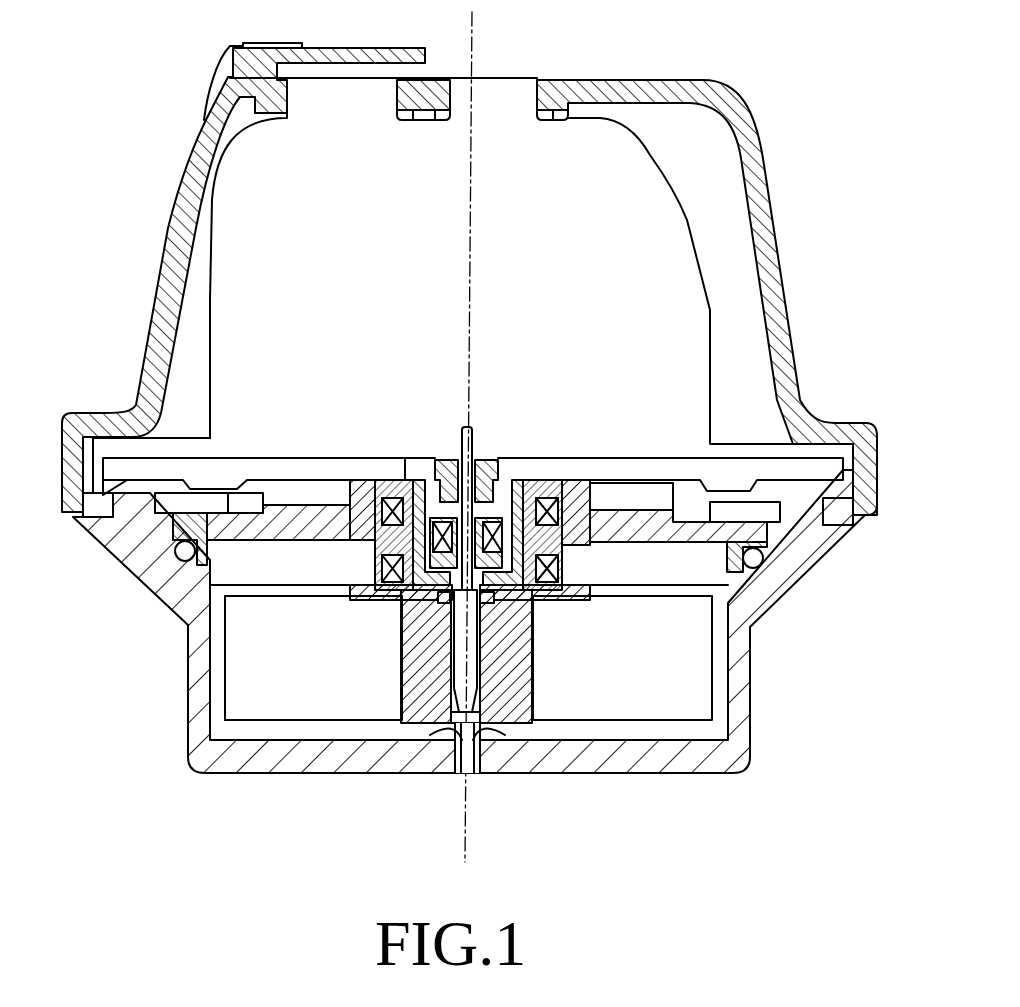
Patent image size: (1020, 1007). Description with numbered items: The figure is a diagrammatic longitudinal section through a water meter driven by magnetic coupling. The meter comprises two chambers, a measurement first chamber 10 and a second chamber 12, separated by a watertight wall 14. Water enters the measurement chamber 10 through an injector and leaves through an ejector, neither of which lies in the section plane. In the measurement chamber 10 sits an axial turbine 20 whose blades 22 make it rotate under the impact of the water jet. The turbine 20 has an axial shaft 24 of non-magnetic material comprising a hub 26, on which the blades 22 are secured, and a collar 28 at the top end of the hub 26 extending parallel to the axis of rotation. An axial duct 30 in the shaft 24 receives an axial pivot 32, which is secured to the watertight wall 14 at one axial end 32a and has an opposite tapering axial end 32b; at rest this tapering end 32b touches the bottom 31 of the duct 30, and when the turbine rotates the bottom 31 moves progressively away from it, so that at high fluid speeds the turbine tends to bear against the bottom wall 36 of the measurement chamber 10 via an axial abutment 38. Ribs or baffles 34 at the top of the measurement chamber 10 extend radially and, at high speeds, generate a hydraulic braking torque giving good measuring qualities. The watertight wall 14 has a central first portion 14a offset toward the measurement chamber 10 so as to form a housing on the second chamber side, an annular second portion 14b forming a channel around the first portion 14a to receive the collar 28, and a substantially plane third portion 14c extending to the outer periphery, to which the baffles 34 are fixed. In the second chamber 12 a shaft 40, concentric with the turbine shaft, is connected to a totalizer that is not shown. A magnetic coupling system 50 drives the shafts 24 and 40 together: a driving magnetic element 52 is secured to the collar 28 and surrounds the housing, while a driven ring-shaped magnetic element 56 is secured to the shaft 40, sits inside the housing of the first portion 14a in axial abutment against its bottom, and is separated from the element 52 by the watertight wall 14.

The measurement first chamber 10 is at (165, 606).
The second chamber 12 is at (683, 297).
The watertight wall 14 is at (148, 410).
The central portion of the watertight wall 14a is at (498, 505).
The annular second portion of the watertight wall 14b is at (573, 475).
The plane third portion of the watertight wall 14c is at (803, 410).
The axial turbine 20 is at (385, 730).
The blades 22 is at (690, 695).
The axial shaft 24 is at (533, 745).
The hub 26 is at (418, 697).
The collar 28 is at (565, 587).
The axial duct 30 is at (473, 678).
The bottom of the axial duct 31 is at (458, 745).
The axial pivot 32 is at (533, 678).
The axial end of the pivot 32a is at (533, 612).
The opposite tapering axial end of the pivot 32b is at (483, 745).
The ribs or baffles 34 is at (178, 568).
The bottom wall of the measurement chamber 36 is at (666, 738).
The axial abutment 38 is at (467, 778).
The shaft 40 is at (480, 437).
The magnetic coupling system 50 is at (392, 480).
The magnetic element 52 is at (360, 478).
The magnetic element 56 is at (437, 516).